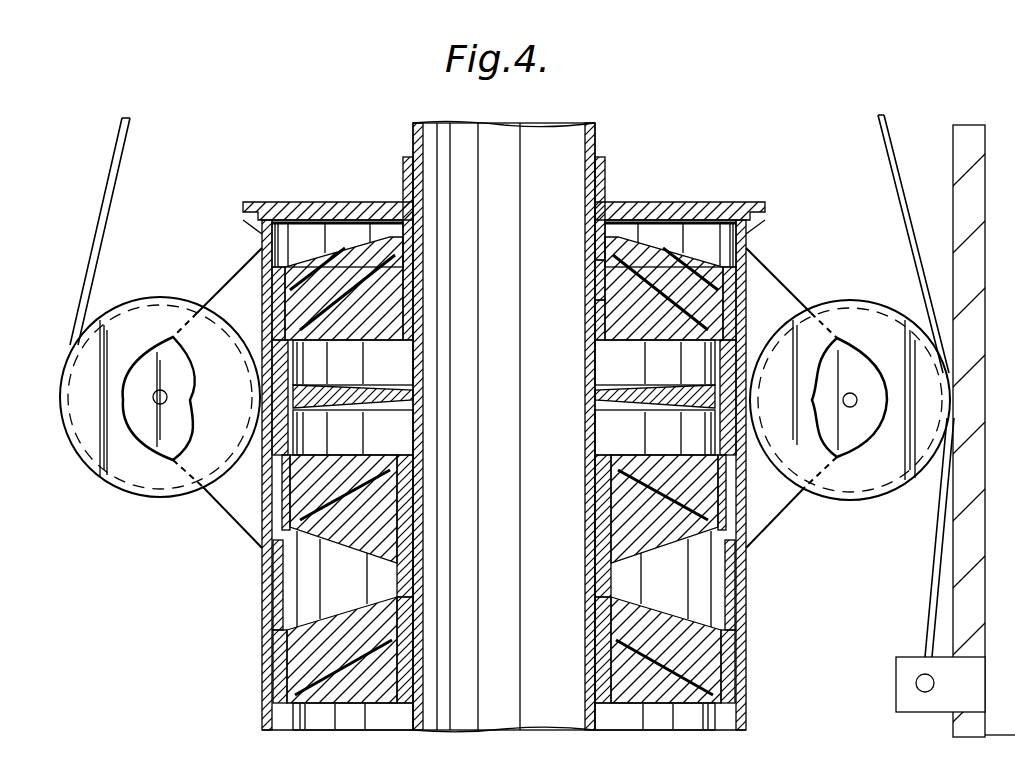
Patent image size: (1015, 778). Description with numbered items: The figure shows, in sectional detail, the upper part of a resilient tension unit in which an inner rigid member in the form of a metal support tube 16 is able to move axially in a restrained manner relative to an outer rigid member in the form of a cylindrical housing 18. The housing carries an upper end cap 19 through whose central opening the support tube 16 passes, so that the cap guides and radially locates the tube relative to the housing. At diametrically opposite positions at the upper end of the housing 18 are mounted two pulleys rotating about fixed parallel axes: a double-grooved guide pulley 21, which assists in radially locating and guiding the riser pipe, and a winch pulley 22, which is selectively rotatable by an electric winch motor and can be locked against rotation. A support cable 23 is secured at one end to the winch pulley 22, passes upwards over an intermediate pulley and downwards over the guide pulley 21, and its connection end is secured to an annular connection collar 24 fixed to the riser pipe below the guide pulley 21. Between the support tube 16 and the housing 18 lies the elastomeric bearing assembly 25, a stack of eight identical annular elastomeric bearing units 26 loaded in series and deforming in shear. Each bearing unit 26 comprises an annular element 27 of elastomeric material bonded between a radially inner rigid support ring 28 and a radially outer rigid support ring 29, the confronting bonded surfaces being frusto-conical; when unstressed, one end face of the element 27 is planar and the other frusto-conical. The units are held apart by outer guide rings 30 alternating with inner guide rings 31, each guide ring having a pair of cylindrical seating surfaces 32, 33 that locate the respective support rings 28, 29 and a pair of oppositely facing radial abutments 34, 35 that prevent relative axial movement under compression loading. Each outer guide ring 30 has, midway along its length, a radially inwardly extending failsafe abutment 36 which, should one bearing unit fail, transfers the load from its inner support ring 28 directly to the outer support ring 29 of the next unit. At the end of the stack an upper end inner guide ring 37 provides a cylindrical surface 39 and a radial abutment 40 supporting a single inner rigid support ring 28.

The support tube 16 is at (420, 717).
The cylindrical housing 18 is at (267, 695).
The upper end cap 19 is at (343, 188).
The guide pulley 21 is at (888, 473).
The winch pulley 22 is at (150, 477).
The support cable 23 is at (105, 218).
The connection collar 24 is at (915, 702).
The elastomeric bearing assembly 25 is at (350, 737).
The elastomeric bearing unit 26 is at (680, 283).
The annular element of elastomeric material 27 is at (744, 248).
The inner rigid support ring 28 is at (610, 275).
The outer rigid support ring 29 is at (733, 318).
The outer guide ring 30 is at (748, 453).
The inner guide ring 31 is at (605, 578).
The cylindrical seating surface 32 is at (737, 328).
The cylindrical seating surface 33 is at (600, 655).
The radial abutment 34 is at (708, 357).
The radial abutment 35 is at (600, 615).
The failsafe abutment 36 is at (668, 400).
The upper end inner guide ring 37 is at (598, 278).
The cylindrical surface 39 is at (598, 310).
The radial abutment 40 is at (604, 246).